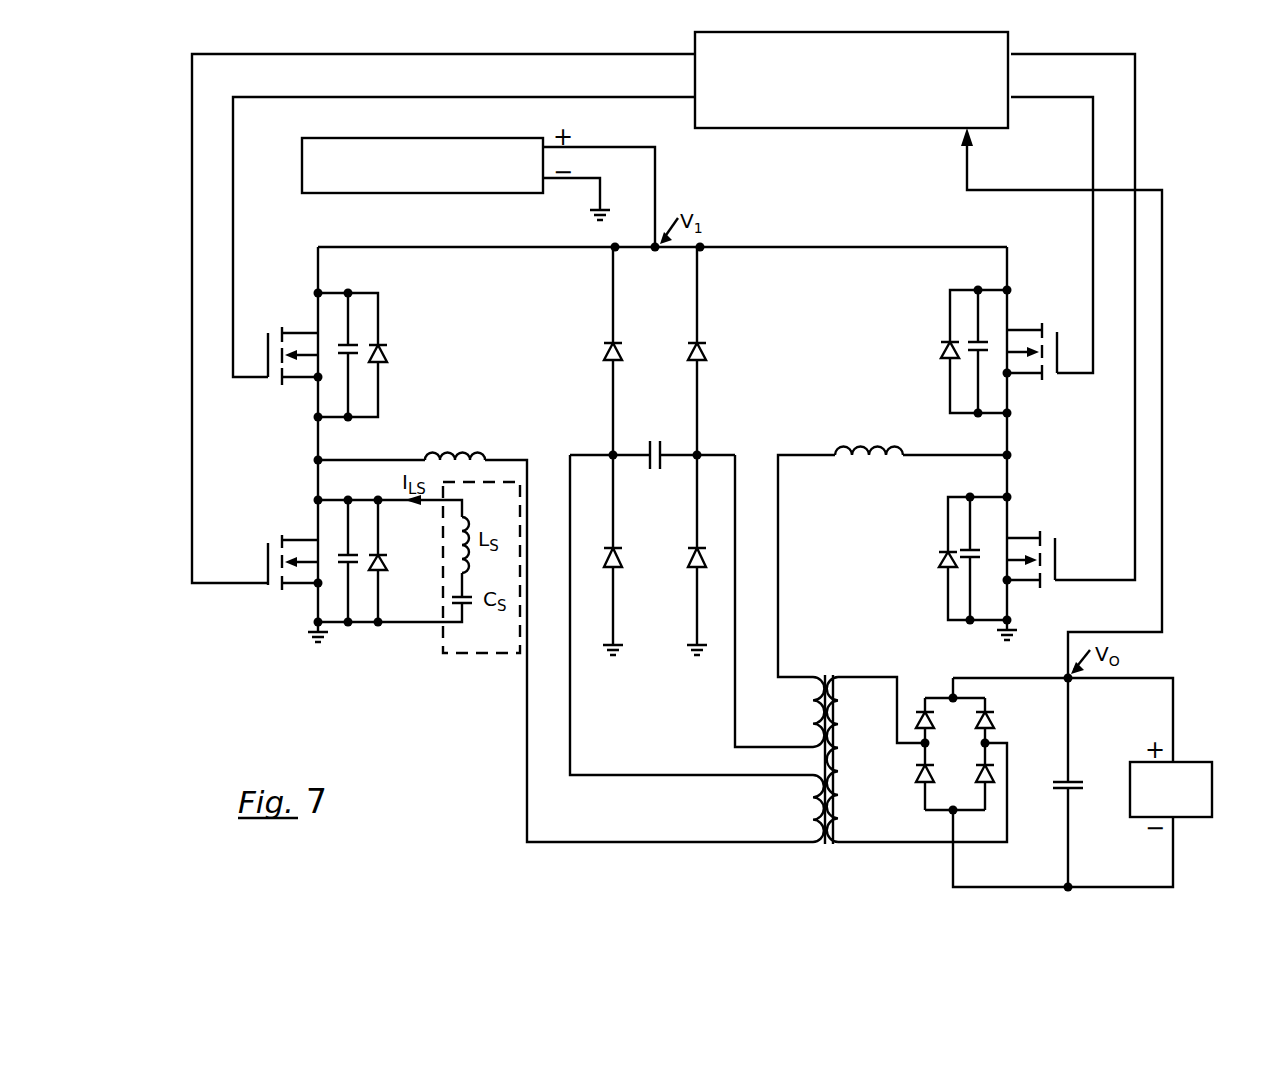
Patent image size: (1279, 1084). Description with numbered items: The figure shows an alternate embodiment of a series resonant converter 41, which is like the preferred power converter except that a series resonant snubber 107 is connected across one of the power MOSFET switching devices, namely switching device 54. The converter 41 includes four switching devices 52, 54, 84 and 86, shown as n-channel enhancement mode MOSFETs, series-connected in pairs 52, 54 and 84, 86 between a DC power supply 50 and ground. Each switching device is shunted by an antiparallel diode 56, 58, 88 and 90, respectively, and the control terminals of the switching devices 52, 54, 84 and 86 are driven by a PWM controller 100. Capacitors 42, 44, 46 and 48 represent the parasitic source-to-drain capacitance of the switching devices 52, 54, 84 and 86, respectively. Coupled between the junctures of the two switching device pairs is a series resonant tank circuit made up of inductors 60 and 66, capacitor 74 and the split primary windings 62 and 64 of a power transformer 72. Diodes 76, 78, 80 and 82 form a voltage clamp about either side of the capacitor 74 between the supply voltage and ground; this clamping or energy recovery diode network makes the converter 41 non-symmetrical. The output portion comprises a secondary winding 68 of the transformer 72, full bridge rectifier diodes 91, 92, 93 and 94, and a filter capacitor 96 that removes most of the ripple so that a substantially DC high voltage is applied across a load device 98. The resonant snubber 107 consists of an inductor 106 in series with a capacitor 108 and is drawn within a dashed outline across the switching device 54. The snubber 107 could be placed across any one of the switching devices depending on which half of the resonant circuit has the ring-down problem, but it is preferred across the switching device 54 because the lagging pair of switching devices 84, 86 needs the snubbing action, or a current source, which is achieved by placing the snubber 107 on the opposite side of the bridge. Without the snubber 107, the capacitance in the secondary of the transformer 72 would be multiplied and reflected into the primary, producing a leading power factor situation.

The series resonant converter 41 is at (1204, 142).
The capacitor 42 is at (353, 345).
The capacitor 44 is at (353, 550).
The capacitor 46 is at (980, 342).
The capacitor 48 is at (978, 546).
The DC power supply 50 is at (385, 137).
The switching device 52 is at (300, 326).
The switching device 54 is at (300, 531).
The antiparallel diode 56 is at (384, 347).
The antiparallel diode 58 is at (385, 554).
The inductor 60 is at (450, 456).
The split primary winding 62 is at (811, 810).
The split primary winding 64 is at (810, 713).
The inductor 66 is at (865, 453).
The secondary winding 68 is at (845, 713).
The power transformer 72 is at (828, 850).
The capacitor 74 is at (652, 437).
The diode 76 is at (604, 348).
The diode 78 is at (620, 553).
The diode 80 is at (707, 343).
The diode 82 is at (690, 560).
The switching device 84 is at (1027, 377).
The switching device 86 is at (1027, 588).
The antiparallel diode 88 is at (941, 350).
The antiparallel diode 90 is at (940, 556).
The rectifier diode 91 is at (916, 717).
The rectifier diode 92 is at (917, 768).
The rectifier diode 93 is at (993, 715).
The rectifier diode 94 is at (977, 768).
The filter capacitor 96 is at (1050, 785).
The load device 98 is at (1126, 778).
The PWM controller 100 is at (850, 130).
The inductor 106 is at (474, 526).
The series resonant snubber 107 is at (485, 656).
The capacitor 108 is at (468, 607).